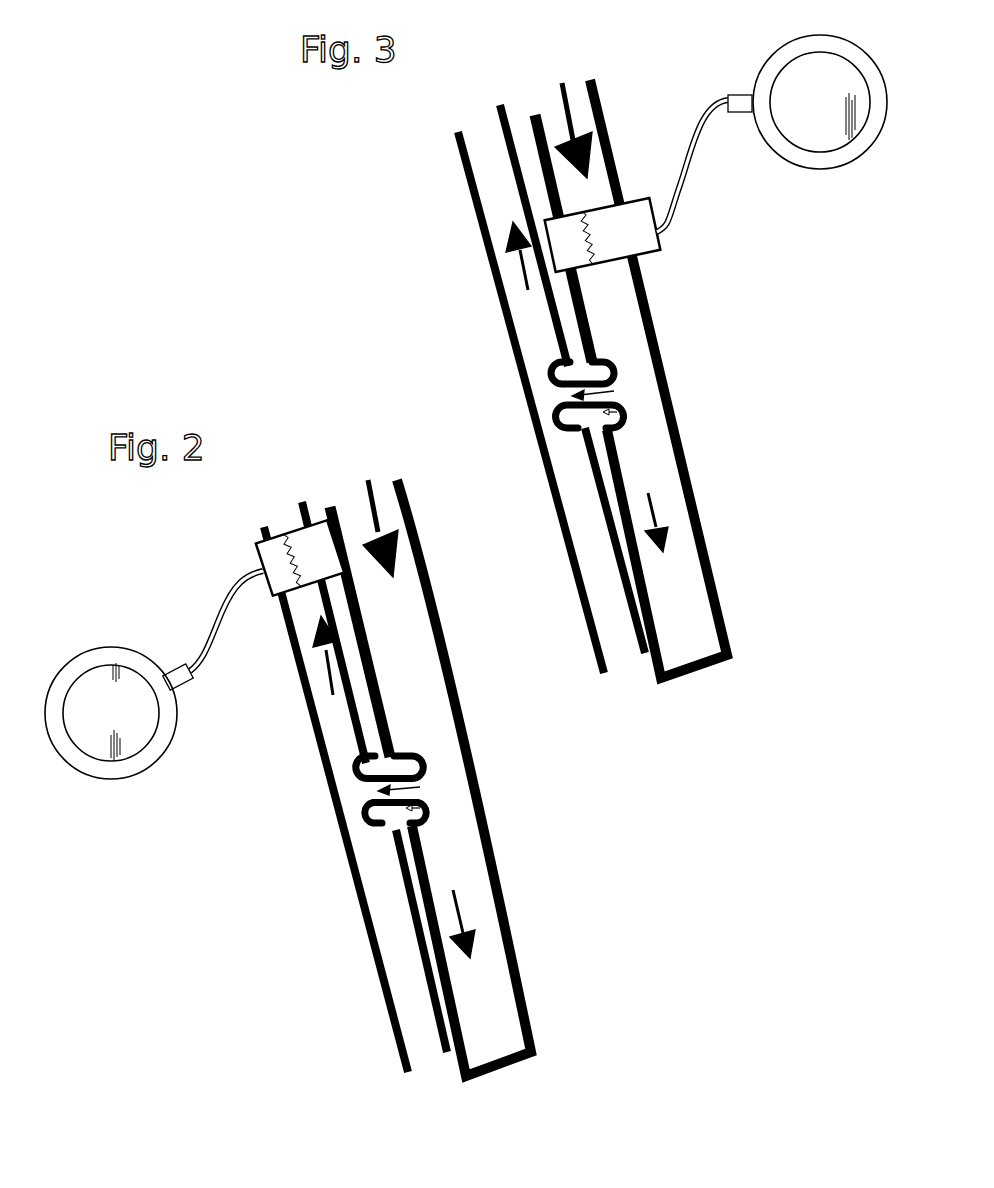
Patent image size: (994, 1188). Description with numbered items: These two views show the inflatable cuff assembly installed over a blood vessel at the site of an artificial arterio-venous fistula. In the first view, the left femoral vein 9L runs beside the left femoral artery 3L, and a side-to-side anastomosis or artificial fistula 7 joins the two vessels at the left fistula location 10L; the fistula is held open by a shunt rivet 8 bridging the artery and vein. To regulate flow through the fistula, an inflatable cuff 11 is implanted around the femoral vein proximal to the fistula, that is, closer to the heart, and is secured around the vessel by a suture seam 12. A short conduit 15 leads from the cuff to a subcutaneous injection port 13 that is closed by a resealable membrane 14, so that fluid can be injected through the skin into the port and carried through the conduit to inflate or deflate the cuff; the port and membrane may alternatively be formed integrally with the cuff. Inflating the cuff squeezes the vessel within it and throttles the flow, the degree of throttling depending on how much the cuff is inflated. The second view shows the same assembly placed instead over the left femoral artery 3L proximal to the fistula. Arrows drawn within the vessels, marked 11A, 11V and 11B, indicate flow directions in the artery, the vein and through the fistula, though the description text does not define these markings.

In FIG. 3, the left femoral artery 3L is at (718, 602).
In FIG. 2, the left femoral artery 3L is at (525, 1000).
In FIG. 3, the artificial arterio-venous fistula 7 is at (628, 420).
In FIG. 2, the artificial arterio-venous fistula 7 is at (432, 807).
In FIG. 3, the shunt rivet 8 is at (604, 362).
In FIG. 2, the shunt rivet 8 is at (427, 760).
In FIG. 3, the left femoral vein 9L is at (557, 522).
In FIG. 2, the left femoral vein 9L is at (363, 918).
In FIG. 3, the left fistula location 10L is at (497, 290).
In FIG. 2, the left fistula location 10L is at (301, 682).
In FIG. 3, the inflatable cuff 11 is at (660, 245).
In FIG. 2, the inflatable cuff 11 is at (258, 550).
In FIG. 3, the inflow direction 11A is at (557, 112).
In FIG. 2, the inflow direction 11A is at (364, 508).
In FIG. 3, the bypass flow direction 11B is at (610, 389).
In FIG. 2, the bypass flow direction 11B is at (416, 785).
In FIG. 3, the vent flow direction 11V is at (527, 270).
In FIG. 2, the vent flow direction 11V is at (332, 666).
In FIG. 2, the suture seam 12 is at (286, 538).
In FIG. 3, the subcutaneous injection port 13 is at (855, 152).
In FIG. 2, the subcutaneous injection port 13 is at (110, 779).
In FIG. 3, the resealable membrane 14 is at (833, 111).
In FIG. 2, the resealable membrane 14 is at (122, 717).
In FIG. 3, the conduit 15 is at (692, 190).
In FIG. 2, the conduit 15 is at (212, 627).